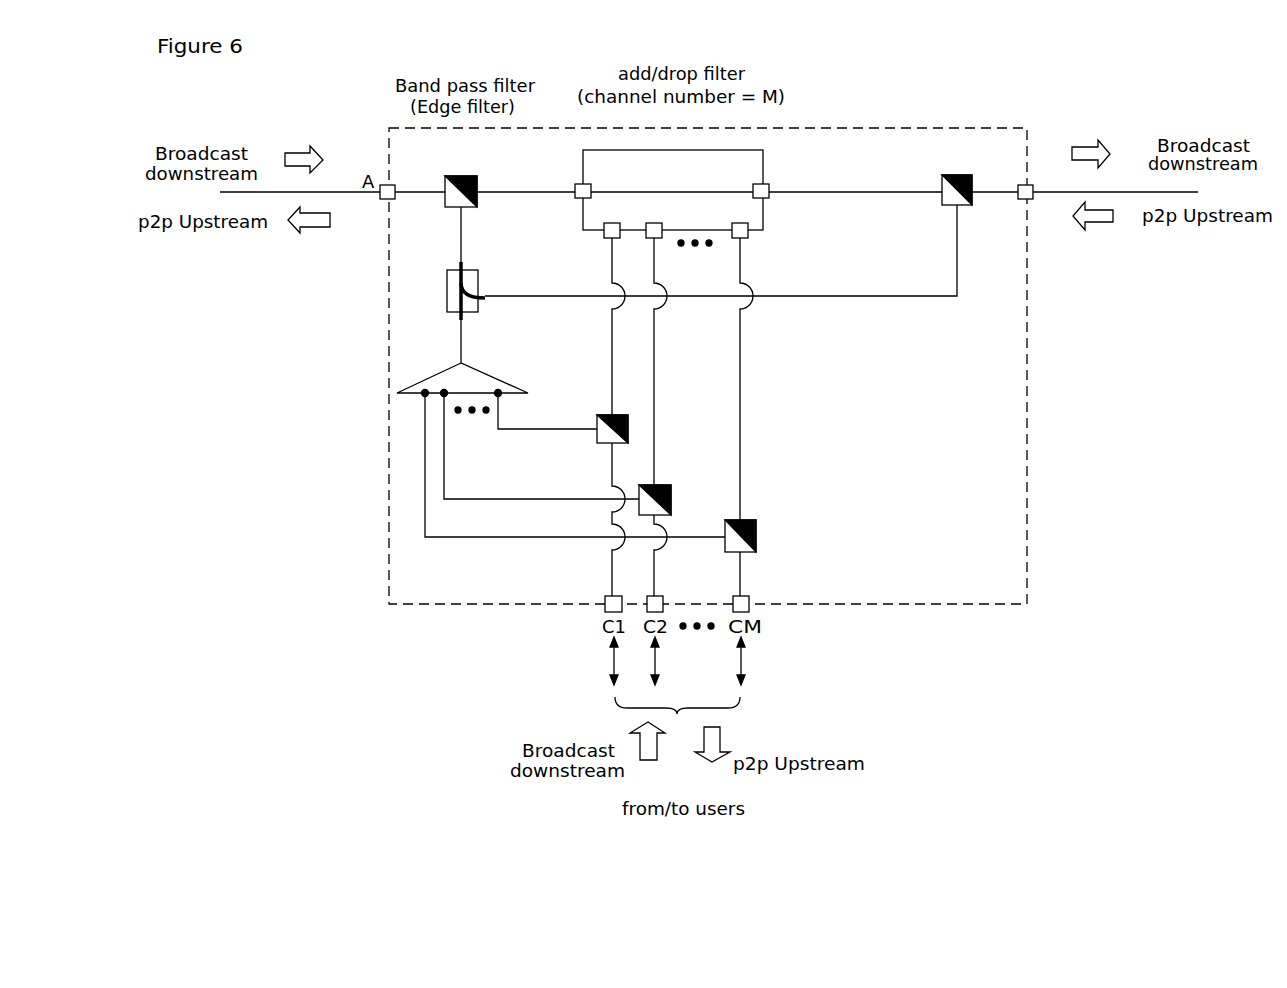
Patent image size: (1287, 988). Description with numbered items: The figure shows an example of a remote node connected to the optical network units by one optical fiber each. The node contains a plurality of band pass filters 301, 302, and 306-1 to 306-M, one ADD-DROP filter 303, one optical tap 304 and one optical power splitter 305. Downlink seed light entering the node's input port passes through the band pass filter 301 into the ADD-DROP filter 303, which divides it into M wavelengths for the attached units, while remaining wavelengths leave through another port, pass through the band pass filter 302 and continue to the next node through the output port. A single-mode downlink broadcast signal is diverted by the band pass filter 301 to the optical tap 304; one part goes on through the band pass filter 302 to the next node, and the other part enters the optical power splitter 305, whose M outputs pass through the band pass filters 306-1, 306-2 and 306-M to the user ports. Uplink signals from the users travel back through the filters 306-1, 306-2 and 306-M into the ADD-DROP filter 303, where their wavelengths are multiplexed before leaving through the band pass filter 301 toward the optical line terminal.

The band pass filter 301 is at (462, 176).
The band pass filter 302 is at (956, 175).
The ADD-DROP filter 303 is at (766, 161).
The optical tap 304 is at (447, 292).
The optical power splitter 305 is at (487, 376).
The band pass filter 306-1 is at (598, 415).
The band pass filter 306-2 is at (655, 485).
The band pass filter 306-M is at (742, 520).